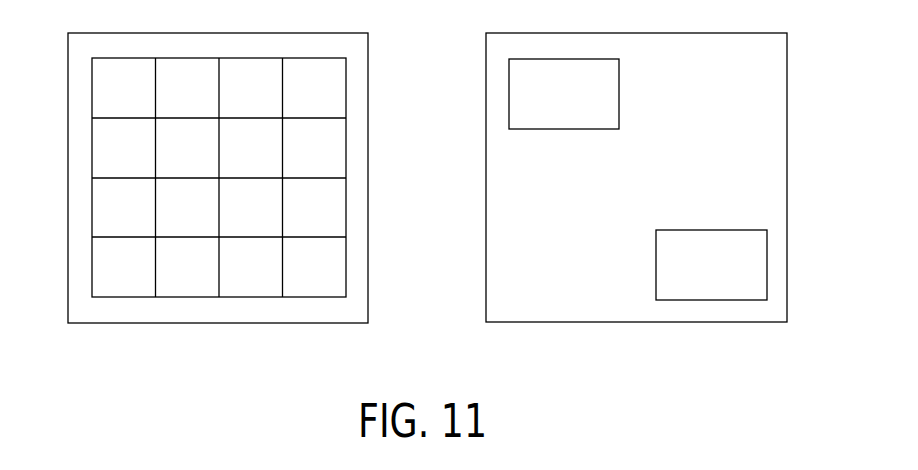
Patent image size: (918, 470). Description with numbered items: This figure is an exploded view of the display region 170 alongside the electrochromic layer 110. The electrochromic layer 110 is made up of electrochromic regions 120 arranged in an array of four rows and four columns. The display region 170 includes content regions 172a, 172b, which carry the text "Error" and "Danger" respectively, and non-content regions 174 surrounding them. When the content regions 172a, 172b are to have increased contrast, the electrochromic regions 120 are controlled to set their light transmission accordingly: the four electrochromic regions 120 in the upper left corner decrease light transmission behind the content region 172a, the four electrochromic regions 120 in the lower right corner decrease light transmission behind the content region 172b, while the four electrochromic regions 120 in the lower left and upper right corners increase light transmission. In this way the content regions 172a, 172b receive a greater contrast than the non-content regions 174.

The electrochromic layer 110 is at (358, 283).
The electrochromic regions 120 is at (107, 151).
The display region 170 is at (788, 117).
The content region 172a is at (622, 110).
The content region 172b is at (654, 249).
The non-content regions 174 is at (527, 310).